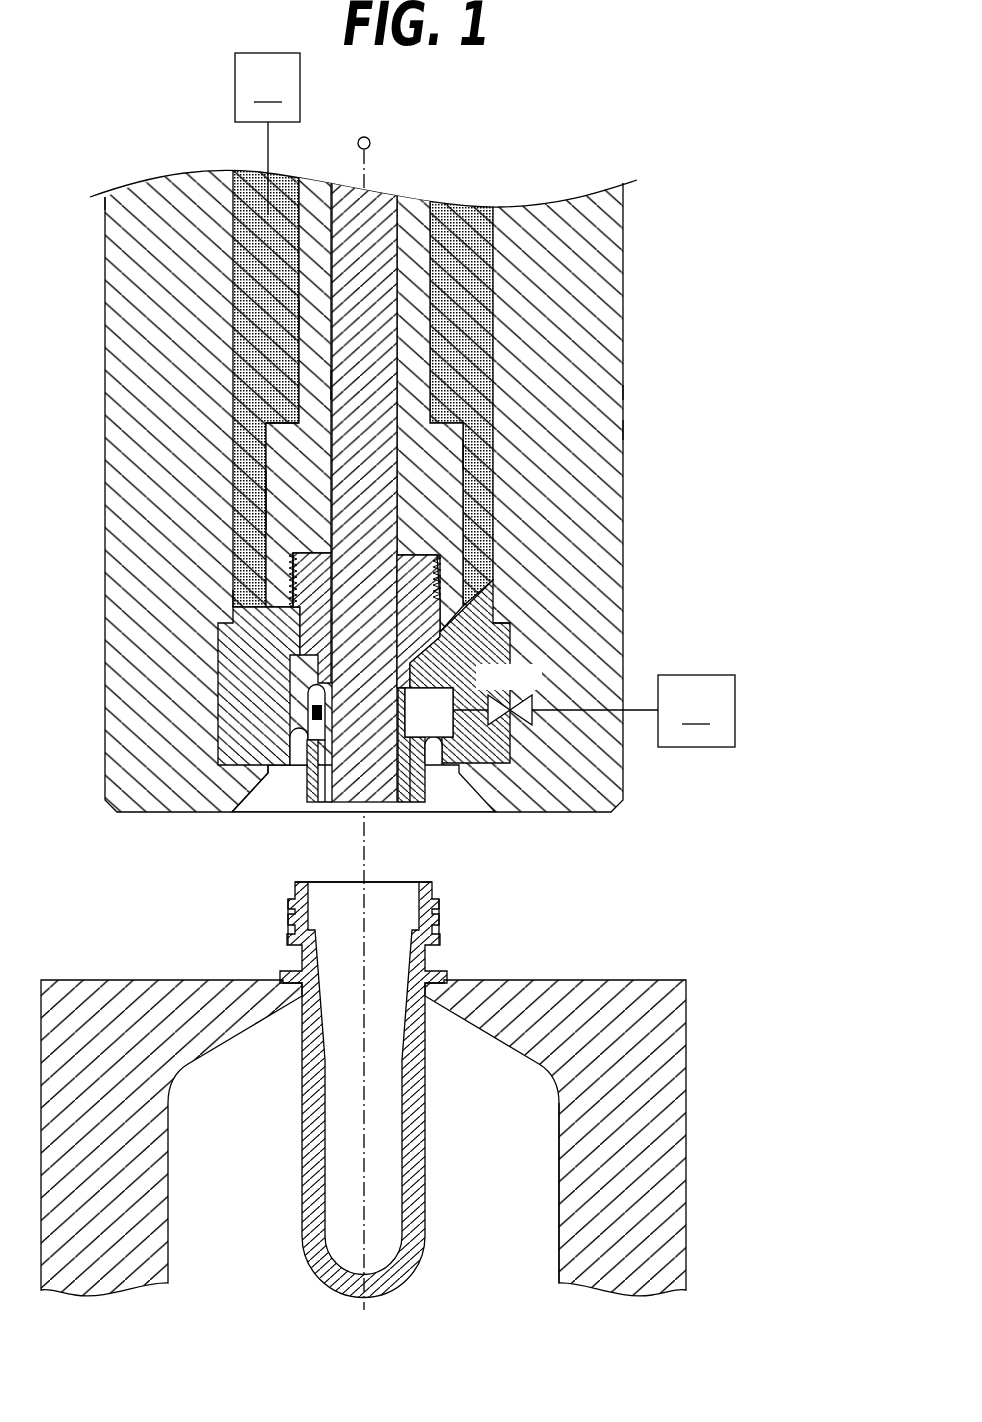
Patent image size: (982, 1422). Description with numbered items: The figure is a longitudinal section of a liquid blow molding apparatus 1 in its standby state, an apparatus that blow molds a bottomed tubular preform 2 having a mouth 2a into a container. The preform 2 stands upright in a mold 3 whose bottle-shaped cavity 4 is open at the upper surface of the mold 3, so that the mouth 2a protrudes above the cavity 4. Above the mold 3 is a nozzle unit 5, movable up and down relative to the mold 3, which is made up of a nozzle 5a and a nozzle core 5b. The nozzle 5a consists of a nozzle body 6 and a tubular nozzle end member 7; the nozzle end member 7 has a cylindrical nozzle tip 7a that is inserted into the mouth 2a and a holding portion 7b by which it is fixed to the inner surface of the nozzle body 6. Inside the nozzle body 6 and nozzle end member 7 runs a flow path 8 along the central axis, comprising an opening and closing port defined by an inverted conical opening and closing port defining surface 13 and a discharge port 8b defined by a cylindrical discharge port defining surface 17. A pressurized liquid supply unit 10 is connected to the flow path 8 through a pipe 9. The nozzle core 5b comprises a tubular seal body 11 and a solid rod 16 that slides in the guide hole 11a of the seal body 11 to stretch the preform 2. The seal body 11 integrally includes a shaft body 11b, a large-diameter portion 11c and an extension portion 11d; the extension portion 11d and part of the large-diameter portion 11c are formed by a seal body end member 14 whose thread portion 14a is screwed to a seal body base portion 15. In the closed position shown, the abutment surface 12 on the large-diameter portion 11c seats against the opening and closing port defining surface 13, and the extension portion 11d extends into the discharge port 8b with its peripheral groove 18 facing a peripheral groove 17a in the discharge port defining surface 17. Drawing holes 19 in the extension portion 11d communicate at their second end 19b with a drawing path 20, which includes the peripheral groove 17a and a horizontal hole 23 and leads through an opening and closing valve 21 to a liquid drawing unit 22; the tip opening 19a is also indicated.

The liquid blow molding apparatus 1 is at (697, 134).
The preform 2 is at (455, 937).
The mouth 2a is at (432, 896).
The mold 3 is at (692, 1081).
The cavity 4 is at (559, 1182).
The nozzle unit 5 is at (717, 423).
The nozzle 5a is at (632, 393).
The nozzle core 5b is at (478, 457).
The nozzle body 6 is at (590, 503).
The nozzle end member 7 is at (512, 632).
The nozzle tip 7a is at (417, 780).
The holding portion 7b is at (505, 652).
The flow path 8 is at (467, 287).
The discharge port 8b is at (393, 763).
The pipe 9 is at (268, 147).
The pressurized liquid supply unit 10 is at (267, 134).
The seal body 11 is at (256, 459).
The guide hole 11a is at (333, 446).
The shaft body 11b is at (315, 313).
The large-diameter portion 11c is at (287, 513).
The extension portion 11d is at (310, 778).
The abutment surface 12 is at (301, 660).
The opening and closing port defining surface 13 is at (285, 607).
The seal body end member 14 is at (310, 700).
The thread portion 14a is at (290, 565).
The seal body base portion 15 is at (265, 481).
The rod 16 is at (328, 387).
The discharge port defining surface 17 is at (404, 717).
The peripheral groove 17a is at (310, 697).
The peripheral groove 18 is at (315, 727).
The drawing holes 19 is at (323, 775).
The tip opening 19a is at (323, 800).
The second end 19b is at (263, 772).
The drawing path 20 is at (492, 760).
The opening and closing valve 21 is at (530, 767).
The liquid drawing unit 22 is at (696, 711).
The horizontal hole 23 is at (458, 760).